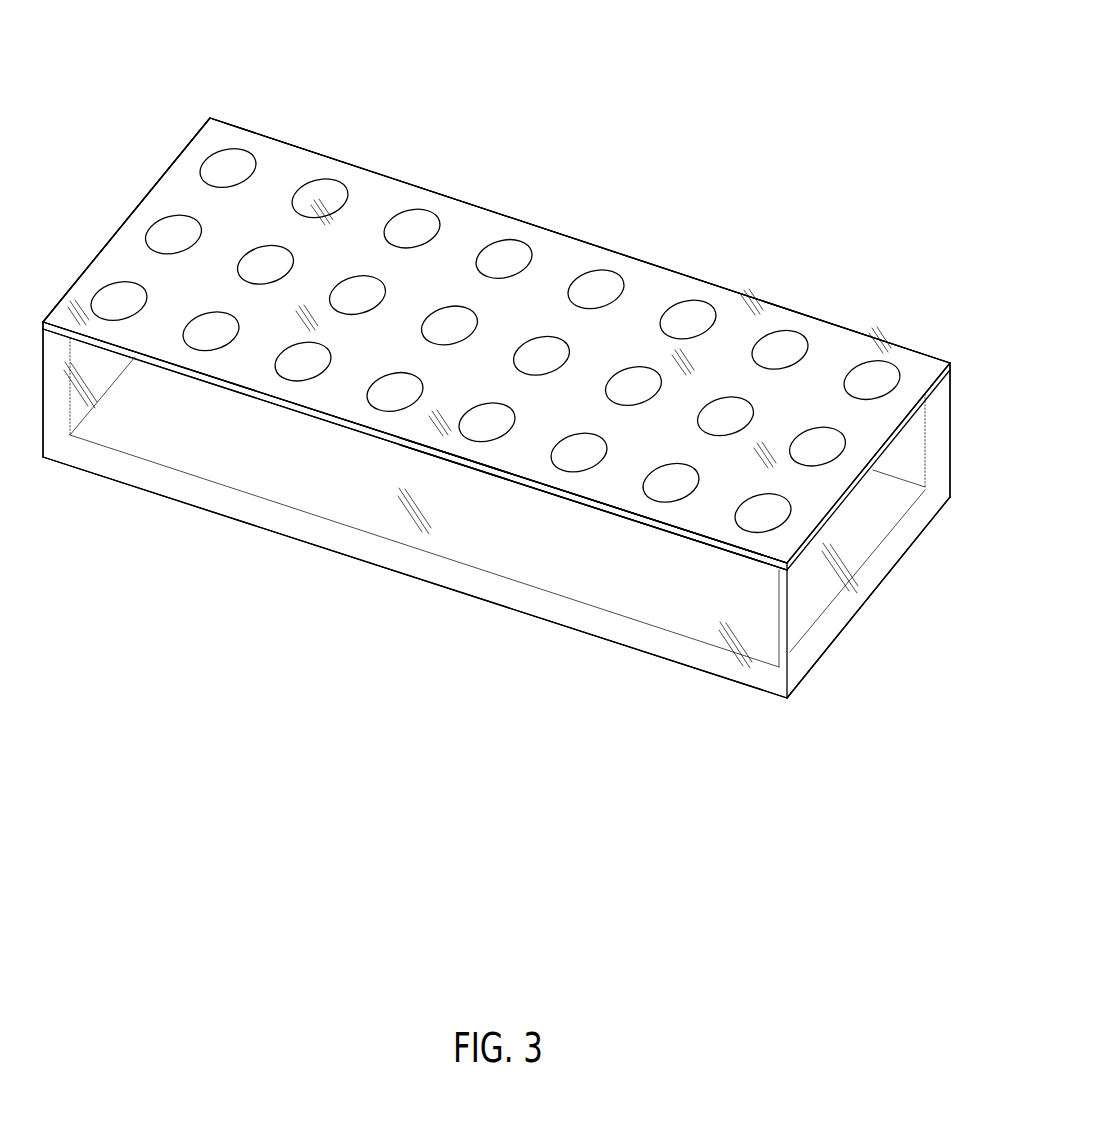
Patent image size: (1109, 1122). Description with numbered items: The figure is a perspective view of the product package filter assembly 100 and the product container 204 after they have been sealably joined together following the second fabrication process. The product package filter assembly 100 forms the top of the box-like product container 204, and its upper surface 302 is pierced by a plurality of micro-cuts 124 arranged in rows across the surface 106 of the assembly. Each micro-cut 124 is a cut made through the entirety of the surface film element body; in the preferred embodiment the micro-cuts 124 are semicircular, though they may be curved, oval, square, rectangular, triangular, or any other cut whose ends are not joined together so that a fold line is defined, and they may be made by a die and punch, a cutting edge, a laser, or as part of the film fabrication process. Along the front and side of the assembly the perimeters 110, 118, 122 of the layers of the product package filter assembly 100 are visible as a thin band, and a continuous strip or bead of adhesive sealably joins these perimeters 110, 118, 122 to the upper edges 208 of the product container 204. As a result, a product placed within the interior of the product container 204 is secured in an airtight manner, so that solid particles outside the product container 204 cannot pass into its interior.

The product package filter assembly 100 is at (889, 42).
The top plate surface 106 is at (748, 325).
The perimeter 110 is at (528, 466).
The perimeter 118 is at (593, 500).
The perimeter 122 is at (593, 507).
The micro-cuts 124 is at (347, 192).
The product container 204 is at (882, 520).
The upper edges 208 is at (302, 407).
The top plate 302 is at (145, 196).